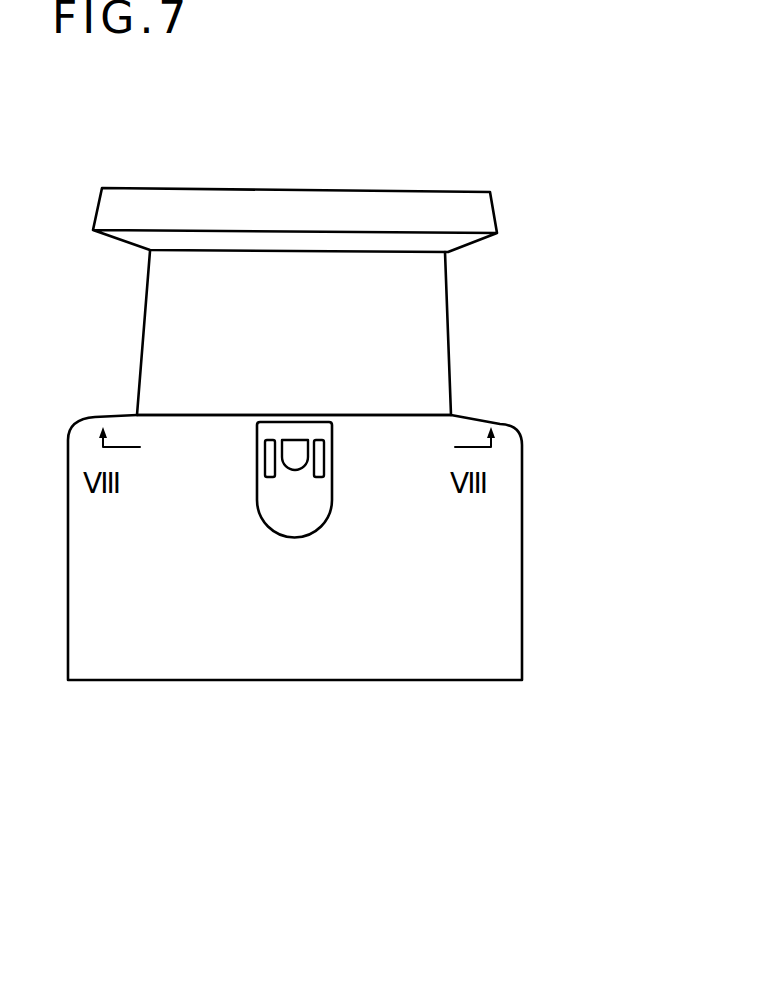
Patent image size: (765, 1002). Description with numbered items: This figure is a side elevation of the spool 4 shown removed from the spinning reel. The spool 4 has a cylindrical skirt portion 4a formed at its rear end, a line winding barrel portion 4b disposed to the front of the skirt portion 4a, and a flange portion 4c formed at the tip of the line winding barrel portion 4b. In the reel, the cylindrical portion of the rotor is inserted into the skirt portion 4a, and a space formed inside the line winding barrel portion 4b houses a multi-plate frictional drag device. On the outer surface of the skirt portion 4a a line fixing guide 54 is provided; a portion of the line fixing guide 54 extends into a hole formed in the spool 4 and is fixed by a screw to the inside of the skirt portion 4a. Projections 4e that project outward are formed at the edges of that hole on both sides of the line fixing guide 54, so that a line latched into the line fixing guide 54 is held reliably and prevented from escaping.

The spool 4 is at (513, 398).
The skirt portion 4a is at (512, 535).
The line winding barrel portion 4b is at (435, 313).
The flange portion 4c is at (487, 210).
The projections 4e is at (266, 456).
The line fixing guide 54 is at (293, 467).